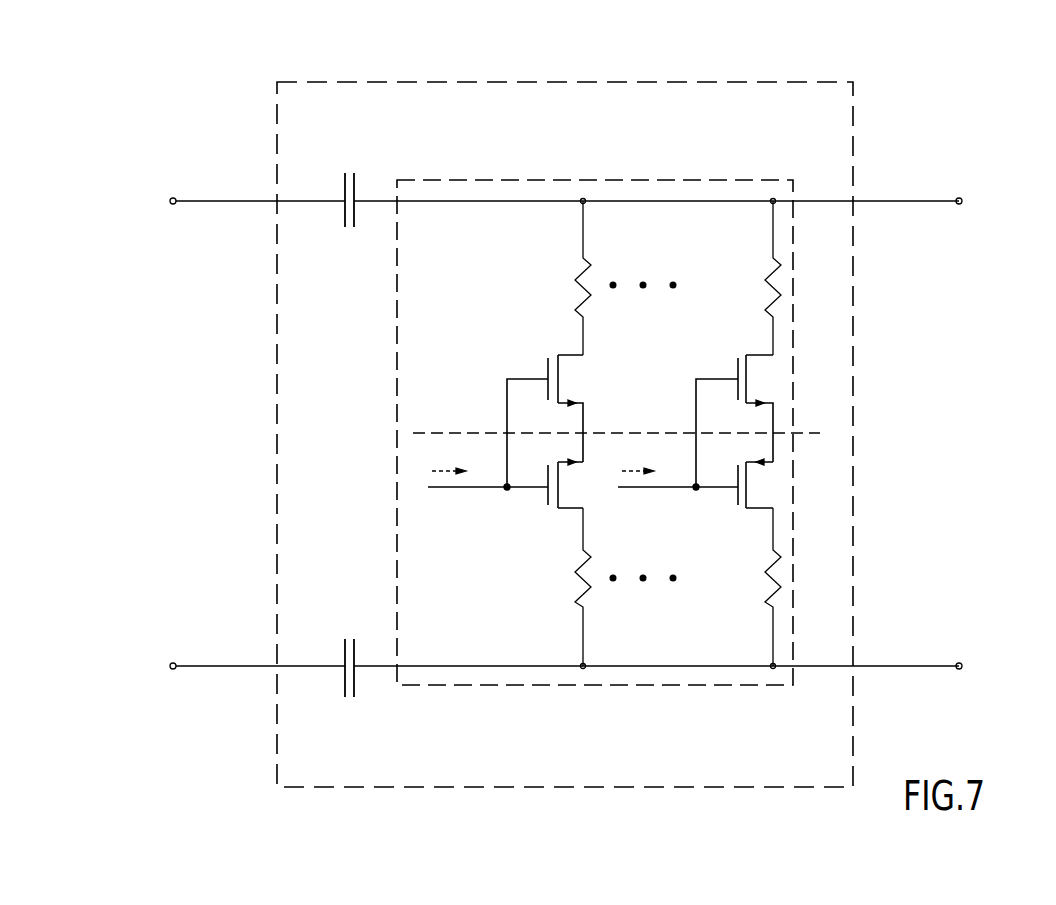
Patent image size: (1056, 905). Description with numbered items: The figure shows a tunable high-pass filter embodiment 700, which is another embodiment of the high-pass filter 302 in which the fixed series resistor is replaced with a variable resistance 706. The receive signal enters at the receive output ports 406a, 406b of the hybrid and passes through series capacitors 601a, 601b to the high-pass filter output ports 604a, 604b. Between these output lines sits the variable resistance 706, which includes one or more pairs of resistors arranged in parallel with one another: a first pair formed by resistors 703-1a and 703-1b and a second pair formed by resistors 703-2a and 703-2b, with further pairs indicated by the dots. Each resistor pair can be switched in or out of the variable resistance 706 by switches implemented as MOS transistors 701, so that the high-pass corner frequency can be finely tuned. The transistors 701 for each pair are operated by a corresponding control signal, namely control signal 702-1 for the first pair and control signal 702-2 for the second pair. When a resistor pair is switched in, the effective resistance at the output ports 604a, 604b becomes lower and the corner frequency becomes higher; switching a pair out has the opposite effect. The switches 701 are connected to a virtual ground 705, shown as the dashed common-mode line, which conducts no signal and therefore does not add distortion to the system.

The high-pass filter embodiment 700 is at (277, 98).
The variable resistance 706 is at (648, 177).
The high-pass filter 302 is at (883, 107).
The receive output port 406a is at (168, 200).
The receive output port 406b is at (168, 665).
The capacitor 601a is at (362, 178).
The capacitor 601b is at (365, 686).
The high-pass filter output port 604a is at (962, 198).
The high-pass filter output port 604b is at (962, 663).
The MOS transistor switch 701 is at (548, 362).
The control signal 702-1 is at (440, 488).
The control signal 702-2 is at (630, 488).
The resistor 703-1a is at (578, 290).
The resistor 703-2a is at (768, 290).
The resistor 703-1b is at (578, 600).
The resistor 703-2b is at (770, 603).
The virtual ground 705 is at (862, 418).